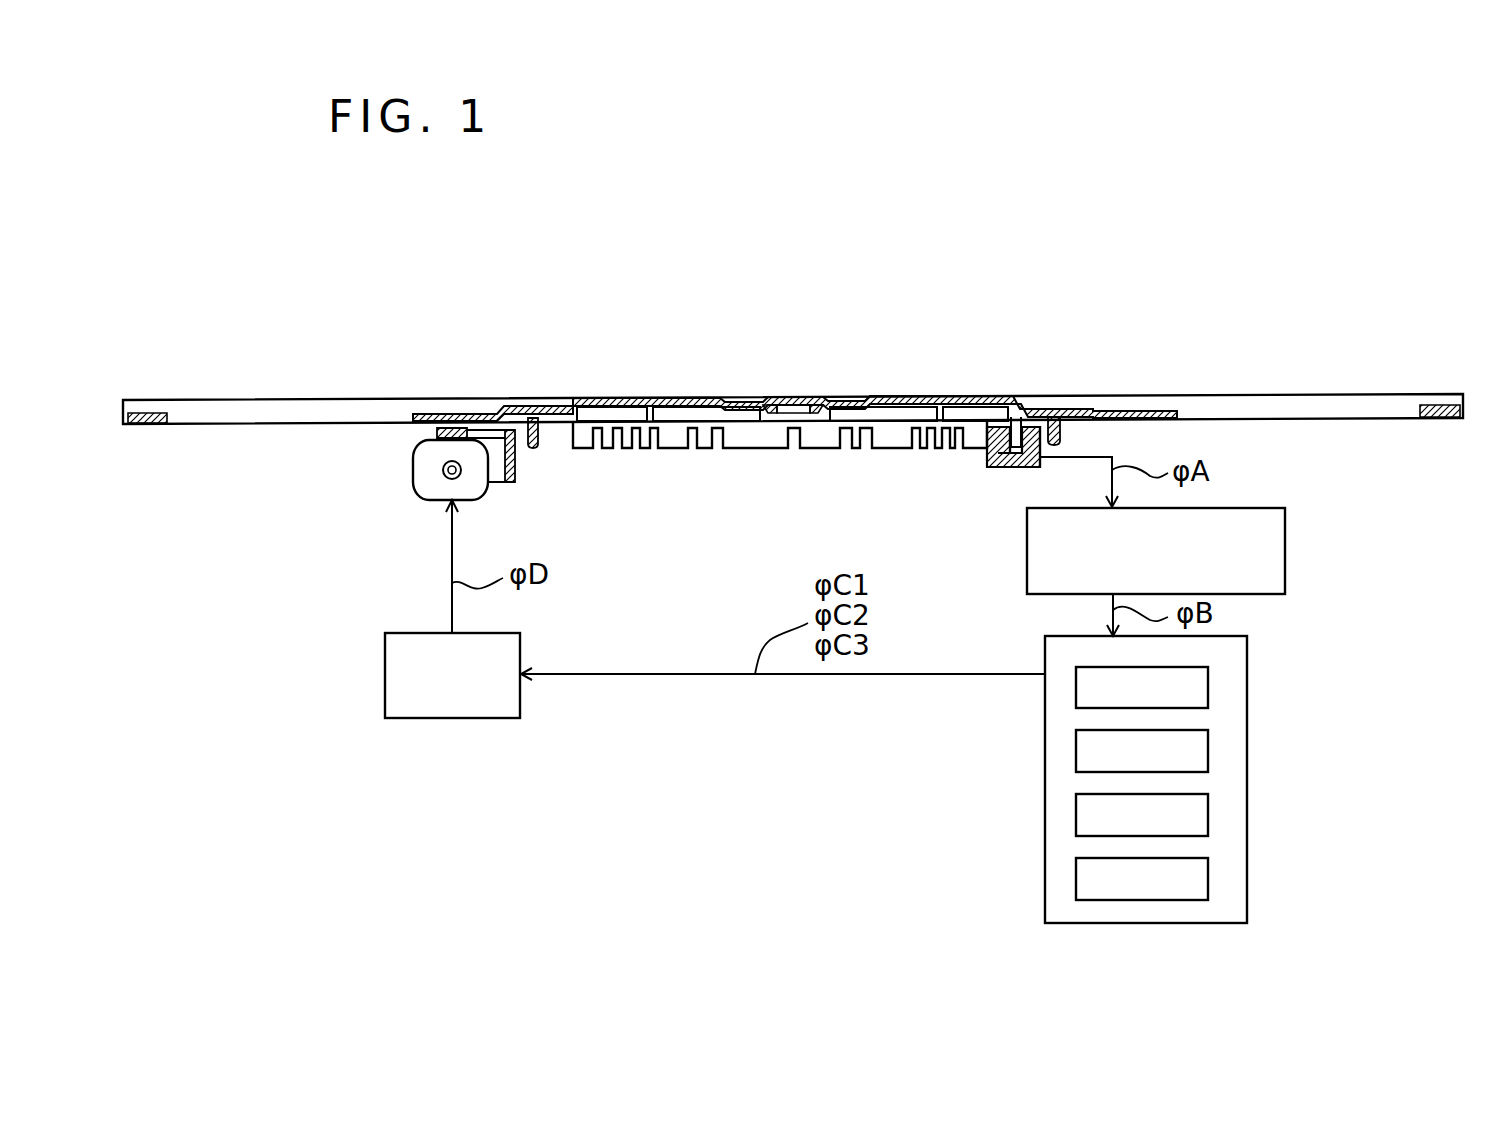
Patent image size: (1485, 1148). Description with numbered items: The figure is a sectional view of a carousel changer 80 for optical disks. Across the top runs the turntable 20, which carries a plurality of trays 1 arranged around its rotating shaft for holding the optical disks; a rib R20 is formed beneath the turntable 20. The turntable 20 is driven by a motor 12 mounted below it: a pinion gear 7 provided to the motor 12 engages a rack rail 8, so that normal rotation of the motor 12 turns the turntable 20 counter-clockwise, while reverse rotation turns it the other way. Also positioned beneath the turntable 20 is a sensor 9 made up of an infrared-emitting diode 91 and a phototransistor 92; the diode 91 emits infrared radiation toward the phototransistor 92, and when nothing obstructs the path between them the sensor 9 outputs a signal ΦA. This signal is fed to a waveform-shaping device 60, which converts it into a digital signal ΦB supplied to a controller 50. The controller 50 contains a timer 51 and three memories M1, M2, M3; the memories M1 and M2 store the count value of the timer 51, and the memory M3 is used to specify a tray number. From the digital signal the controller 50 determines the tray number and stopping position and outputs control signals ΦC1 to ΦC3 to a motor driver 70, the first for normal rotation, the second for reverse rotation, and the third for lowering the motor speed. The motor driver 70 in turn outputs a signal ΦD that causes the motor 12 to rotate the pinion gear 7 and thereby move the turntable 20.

The carousel changer 80 is at (811, 235).
The tray 1 is at (290, 398).
The turntable 20 is at (910, 395).
The rib R20 is at (640, 449).
The pinion gear 7 is at (437, 433).
The rack rail 8 is at (540, 438).
The motor 12 is at (435, 500).
The sensor 9 is at (1007, 468).
The infrared-emitting diode 91 is at (983, 440).
The phototransistor 92 is at (1032, 432).
The waveform-shaping device 60 is at (1286, 520).
The controller 50 is at (1133, 779).
The timer 51 is at (1208, 684).
The memory M1 is at (1208, 748).
The memory M2 is at (1208, 812).
The memory M3 is at (1208, 876).
The motor driver 70 is at (477, 718).